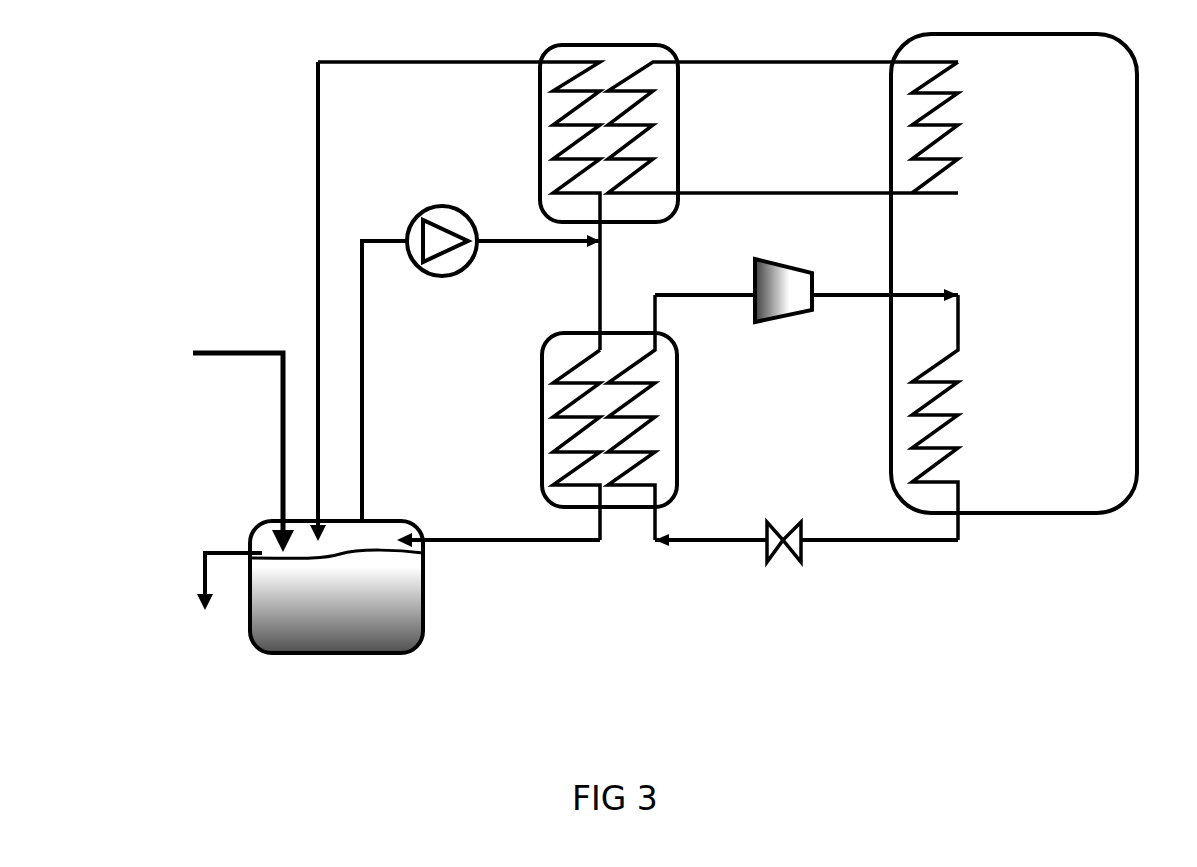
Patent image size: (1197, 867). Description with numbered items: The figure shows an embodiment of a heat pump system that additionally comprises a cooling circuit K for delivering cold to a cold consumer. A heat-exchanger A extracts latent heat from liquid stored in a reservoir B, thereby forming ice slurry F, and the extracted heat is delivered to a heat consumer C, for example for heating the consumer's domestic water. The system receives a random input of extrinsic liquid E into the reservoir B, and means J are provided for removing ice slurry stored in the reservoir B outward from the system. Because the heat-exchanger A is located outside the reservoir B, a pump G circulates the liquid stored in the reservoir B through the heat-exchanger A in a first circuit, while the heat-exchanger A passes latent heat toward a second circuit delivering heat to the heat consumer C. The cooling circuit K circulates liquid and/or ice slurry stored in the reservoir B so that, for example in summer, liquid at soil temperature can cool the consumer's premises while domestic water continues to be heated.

The heat-exchanger A is at (593, 417).
The reservoir B is at (336, 388).
The heat consumer C is at (1014, 287).
The extrinsic liquid E is at (228, 447).
The ice slurry F is at (498, 555).
The pump G is at (481, 392).
The means for removing ice slurry J is at (229, 597).
The cooling circuit K is at (638, 197).